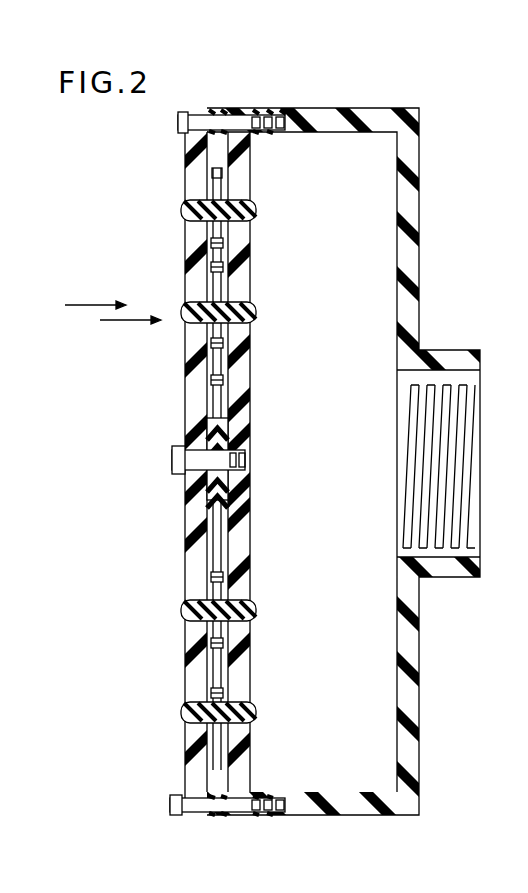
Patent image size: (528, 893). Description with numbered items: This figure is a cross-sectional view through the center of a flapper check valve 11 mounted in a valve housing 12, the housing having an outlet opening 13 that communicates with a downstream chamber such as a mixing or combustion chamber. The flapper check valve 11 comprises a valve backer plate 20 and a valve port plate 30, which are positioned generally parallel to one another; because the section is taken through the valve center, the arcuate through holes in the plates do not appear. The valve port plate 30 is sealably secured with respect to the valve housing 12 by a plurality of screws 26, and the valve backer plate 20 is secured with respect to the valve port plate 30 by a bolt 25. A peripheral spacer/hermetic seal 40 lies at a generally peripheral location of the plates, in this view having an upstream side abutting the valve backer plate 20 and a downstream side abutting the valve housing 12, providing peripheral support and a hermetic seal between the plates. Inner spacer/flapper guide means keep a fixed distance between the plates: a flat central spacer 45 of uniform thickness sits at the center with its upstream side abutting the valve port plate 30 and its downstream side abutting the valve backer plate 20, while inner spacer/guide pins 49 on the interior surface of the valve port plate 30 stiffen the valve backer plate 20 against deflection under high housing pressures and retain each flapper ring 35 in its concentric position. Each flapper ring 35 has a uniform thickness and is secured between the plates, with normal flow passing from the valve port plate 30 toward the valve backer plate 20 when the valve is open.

The flapper check valve 11 is at (97, 700).
The valve housing 12 is at (345, 118).
The outlet opening 13 is at (470, 382).
The valve backer plate 20 is at (240, 186).
The bolt 25 is at (185, 468).
The screws 26 is at (195, 122).
The valve port plate 30 is at (195, 383).
The flapper ring 35 is at (222, 238).
The peripheral spacer/hermetic seal 40 is at (210, 110).
The flat central spacer 45 is at (222, 432).
The inner spacer/guide pins 49 is at (220, 266).